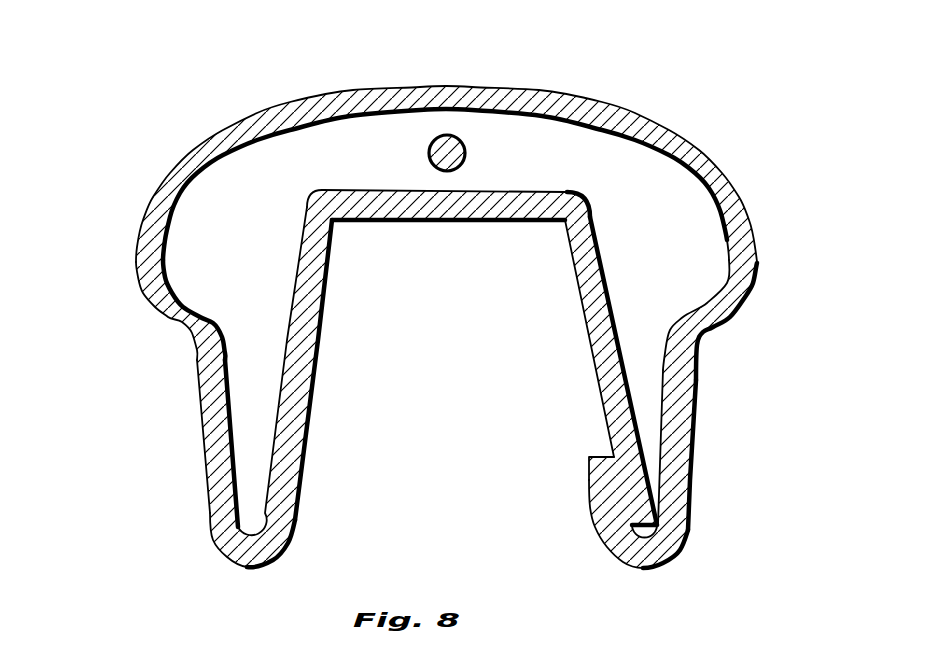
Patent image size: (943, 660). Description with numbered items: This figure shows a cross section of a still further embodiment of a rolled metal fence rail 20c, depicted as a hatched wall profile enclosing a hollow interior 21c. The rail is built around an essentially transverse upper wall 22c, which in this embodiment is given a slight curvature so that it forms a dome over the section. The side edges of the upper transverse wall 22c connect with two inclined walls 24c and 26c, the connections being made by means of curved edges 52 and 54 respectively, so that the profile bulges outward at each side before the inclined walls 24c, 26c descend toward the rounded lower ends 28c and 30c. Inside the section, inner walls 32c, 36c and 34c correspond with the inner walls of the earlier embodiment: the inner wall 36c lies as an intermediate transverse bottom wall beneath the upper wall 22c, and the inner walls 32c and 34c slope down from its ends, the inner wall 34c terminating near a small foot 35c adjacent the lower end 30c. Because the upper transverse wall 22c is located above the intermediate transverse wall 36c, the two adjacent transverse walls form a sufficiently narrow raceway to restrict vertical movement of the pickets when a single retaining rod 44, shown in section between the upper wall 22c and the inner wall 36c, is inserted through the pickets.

The clip 20c is at (620, 100).
The cavity 21c is at (245, 182).
The upper transverse wall 22c is at (470, 87).
The inclined wall 24c is at (210, 412).
The inclined wall 26c is at (685, 438).
The left leg bottom 28c is at (235, 560).
The right leg bottom 30c is at (648, 557).
The inner wall 32c is at (303, 390).
The inner wall 34c is at (610, 375).
The foot 35c is at (600, 492).
The inner wall 36c is at (417, 221).
The pin 44 is at (433, 145).
The curved edge 52 is at (152, 225).
The curved edge 54 is at (748, 243).